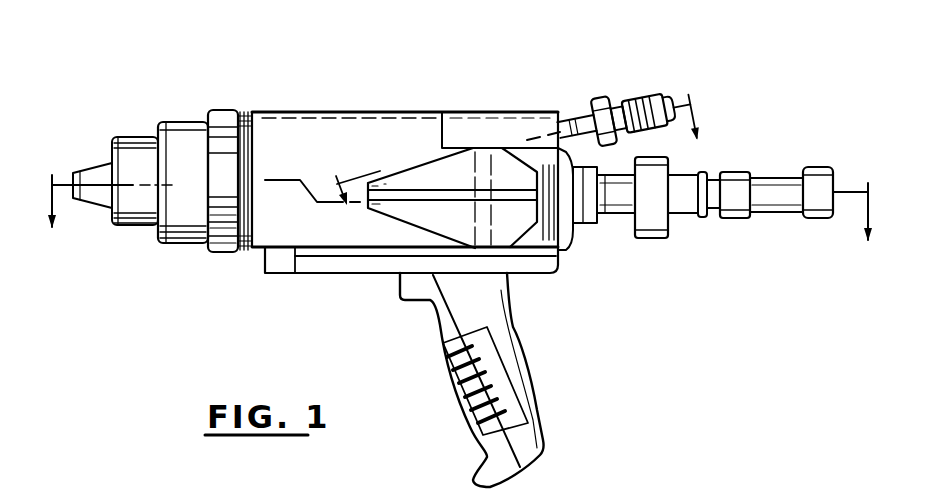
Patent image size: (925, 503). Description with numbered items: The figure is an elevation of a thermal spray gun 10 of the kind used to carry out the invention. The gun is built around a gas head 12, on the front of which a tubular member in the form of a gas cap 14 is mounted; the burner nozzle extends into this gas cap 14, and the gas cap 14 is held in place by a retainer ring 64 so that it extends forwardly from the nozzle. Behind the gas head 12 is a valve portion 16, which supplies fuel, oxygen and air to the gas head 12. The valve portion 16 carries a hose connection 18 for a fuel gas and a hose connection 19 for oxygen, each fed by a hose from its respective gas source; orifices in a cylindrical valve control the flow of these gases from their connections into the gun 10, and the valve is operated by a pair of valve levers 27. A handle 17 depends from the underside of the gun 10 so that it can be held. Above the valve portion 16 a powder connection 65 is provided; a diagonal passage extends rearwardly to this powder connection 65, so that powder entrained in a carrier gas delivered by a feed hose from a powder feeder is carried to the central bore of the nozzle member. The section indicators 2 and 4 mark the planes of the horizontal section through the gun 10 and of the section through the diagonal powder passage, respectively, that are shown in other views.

The thermal spray gun 10 is at (288, 332).
The gas head 12 is at (310, 108).
The gas cap 14 is at (83, 166).
The valve portion 16 is at (478, 106).
The handle 17 is at (517, 355).
The hose connection 18 is at (735, 222).
The hose connection 19 is at (813, 222).
The valve levers 27 is at (413, 212).
The retainer ring 64 is at (190, 118).
The powder connection 65 is at (642, 97).
The section line 2- 2 is at (459, 208).
The section line 4- 4 is at (531, 149).